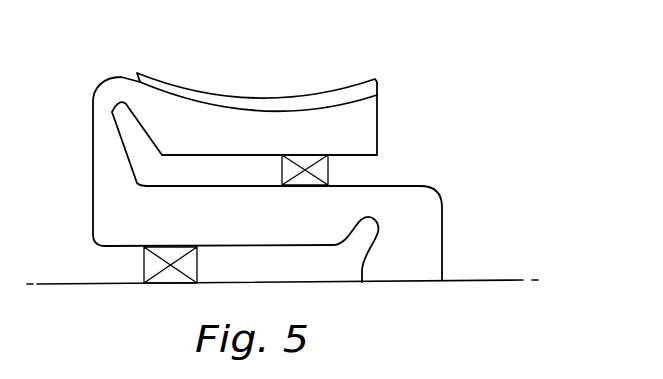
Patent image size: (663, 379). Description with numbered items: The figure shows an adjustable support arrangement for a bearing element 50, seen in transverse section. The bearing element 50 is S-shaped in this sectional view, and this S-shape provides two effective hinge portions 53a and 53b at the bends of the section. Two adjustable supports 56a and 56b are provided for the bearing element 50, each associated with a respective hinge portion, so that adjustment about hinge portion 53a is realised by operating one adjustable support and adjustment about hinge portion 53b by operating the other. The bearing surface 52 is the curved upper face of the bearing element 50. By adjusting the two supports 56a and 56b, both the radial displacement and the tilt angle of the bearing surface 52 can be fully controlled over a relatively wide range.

The bearing element 50 is at (362, 117).
The bearing surface 52 is at (263, 93).
The hinge portion 53a is at (102, 77).
The hinge portion 53b is at (447, 188).
The adjustable support 56a is at (345, 170).
The adjustable support 56b is at (148, 263).